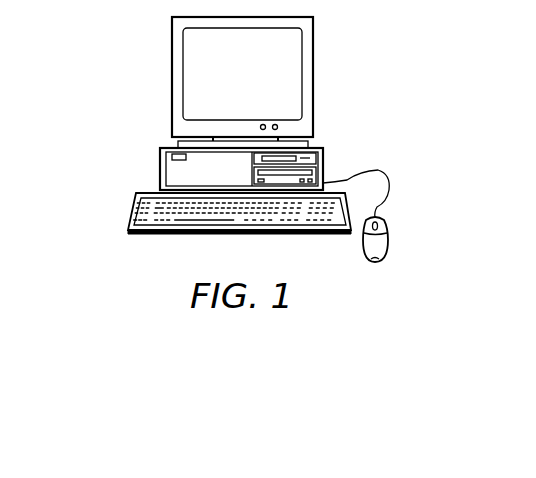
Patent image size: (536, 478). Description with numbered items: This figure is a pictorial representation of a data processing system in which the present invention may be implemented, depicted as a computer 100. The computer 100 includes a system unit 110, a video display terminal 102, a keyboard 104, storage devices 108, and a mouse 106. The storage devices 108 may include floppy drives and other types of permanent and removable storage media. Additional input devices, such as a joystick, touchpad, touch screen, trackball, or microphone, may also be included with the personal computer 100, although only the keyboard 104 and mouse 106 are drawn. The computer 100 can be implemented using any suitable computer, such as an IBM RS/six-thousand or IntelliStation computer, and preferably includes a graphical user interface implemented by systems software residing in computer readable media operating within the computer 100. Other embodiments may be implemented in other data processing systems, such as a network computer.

The computer 100 is at (106, 62).
The video display terminal 102 is at (160, 165).
The keyboard 104 is at (313, 76).
The mouse 106 is at (155, 233).
The storage devices 108 is at (298, 161).
The system unit 110 is at (375, 262).